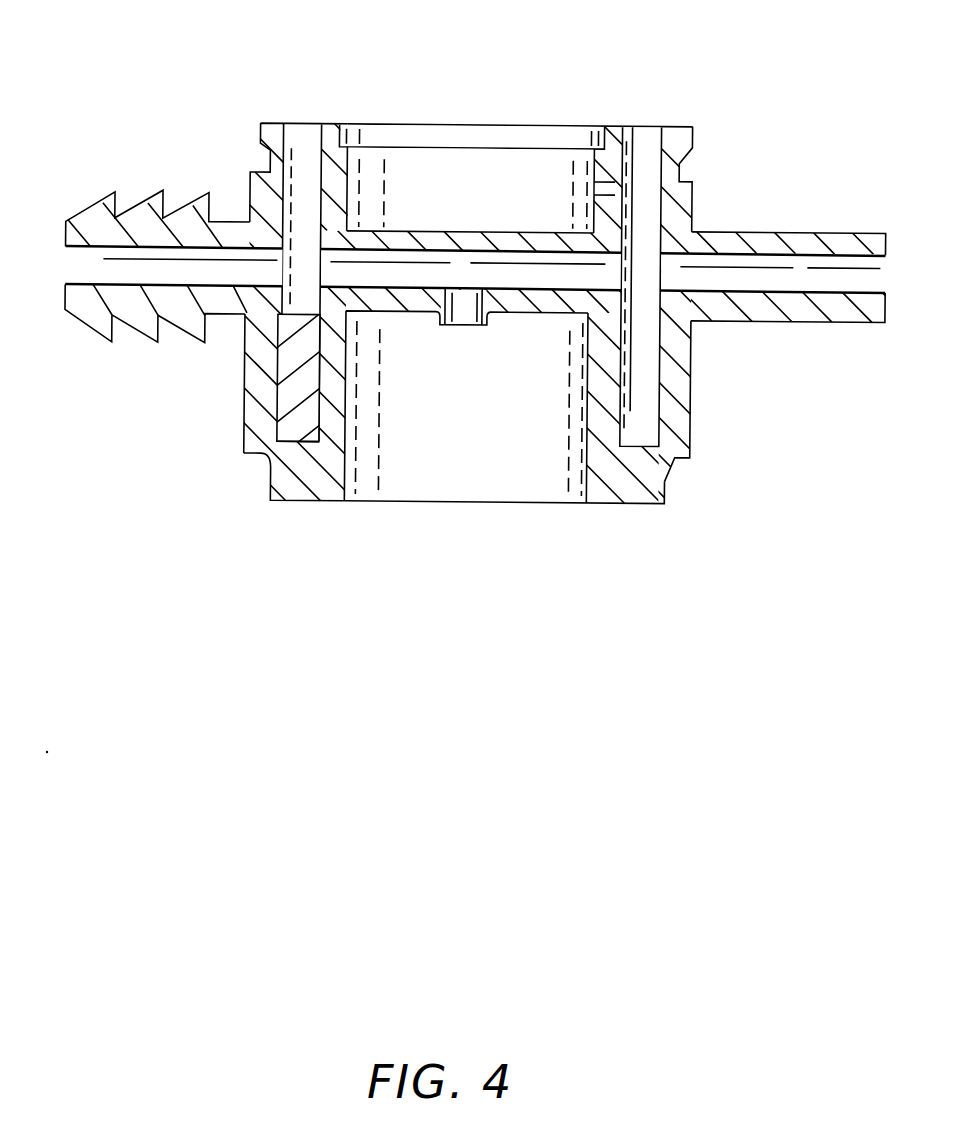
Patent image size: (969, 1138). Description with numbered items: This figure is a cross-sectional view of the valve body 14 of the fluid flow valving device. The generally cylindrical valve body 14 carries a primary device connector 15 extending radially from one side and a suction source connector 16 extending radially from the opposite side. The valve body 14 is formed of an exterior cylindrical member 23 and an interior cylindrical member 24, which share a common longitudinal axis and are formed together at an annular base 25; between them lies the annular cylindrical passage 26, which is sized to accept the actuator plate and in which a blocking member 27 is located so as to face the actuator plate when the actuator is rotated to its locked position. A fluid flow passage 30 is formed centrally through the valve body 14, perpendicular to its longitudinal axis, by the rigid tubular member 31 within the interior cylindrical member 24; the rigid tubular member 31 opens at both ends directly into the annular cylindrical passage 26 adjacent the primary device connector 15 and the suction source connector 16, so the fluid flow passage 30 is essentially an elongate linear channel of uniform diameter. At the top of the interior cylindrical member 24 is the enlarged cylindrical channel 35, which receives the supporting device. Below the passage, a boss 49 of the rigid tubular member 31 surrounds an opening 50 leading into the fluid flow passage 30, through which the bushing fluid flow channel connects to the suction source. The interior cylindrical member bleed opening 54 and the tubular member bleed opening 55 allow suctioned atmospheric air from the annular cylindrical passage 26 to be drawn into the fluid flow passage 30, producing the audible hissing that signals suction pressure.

The valve body 14 is at (233, 452).
The primary device connector 15 is at (727, 340).
The suction source connector 16 is at (113, 172).
The exterior cylindrical member 23 is at (680, 390).
The interior cylindrical member 24 is at (323, 460).
The annular base 25 is at (633, 495).
The annular cylindrical passage 26 is at (650, 147).
The blocking member 27 is at (293, 432).
The fluid flow passage 30 is at (170, 257).
The rigid tubular member 31 is at (383, 235).
The enlarged cylindrical channel 35 is at (535, 140).
The boss 49 is at (435, 315).
The opening 50 is at (473, 322).
The interior cylindrical member bleed opening 54 is at (619, 173).
The tubular member bleed opening 55 is at (540, 232).